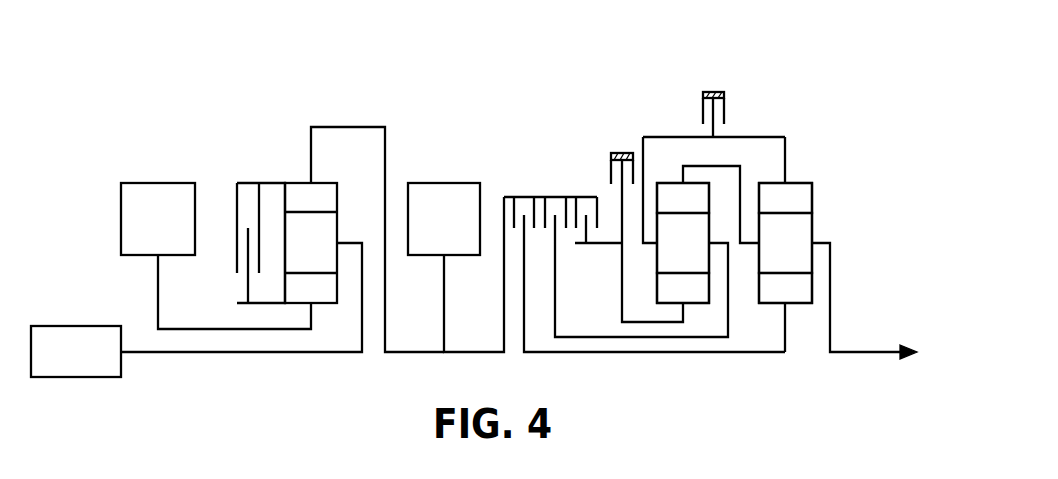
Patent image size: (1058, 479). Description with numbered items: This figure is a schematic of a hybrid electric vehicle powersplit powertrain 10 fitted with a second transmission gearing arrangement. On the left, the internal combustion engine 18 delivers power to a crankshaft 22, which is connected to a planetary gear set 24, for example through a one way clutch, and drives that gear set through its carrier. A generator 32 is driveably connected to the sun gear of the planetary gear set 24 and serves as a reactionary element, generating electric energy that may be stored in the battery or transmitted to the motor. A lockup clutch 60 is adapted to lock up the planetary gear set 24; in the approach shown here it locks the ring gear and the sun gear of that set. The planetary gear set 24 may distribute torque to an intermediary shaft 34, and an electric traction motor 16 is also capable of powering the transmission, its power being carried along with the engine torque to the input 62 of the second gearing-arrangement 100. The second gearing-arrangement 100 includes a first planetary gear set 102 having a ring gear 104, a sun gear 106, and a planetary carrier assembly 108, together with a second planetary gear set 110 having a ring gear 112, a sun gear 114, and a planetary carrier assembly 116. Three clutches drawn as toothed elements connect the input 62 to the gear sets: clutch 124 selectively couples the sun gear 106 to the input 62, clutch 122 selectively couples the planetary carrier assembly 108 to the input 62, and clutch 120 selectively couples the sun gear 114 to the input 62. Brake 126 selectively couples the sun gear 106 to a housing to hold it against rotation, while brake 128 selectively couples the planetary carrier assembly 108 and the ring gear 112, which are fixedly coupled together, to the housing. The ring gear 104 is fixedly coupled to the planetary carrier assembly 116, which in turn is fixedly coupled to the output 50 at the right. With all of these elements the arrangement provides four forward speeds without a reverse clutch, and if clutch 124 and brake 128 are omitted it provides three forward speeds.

The powersplit powertrain 10 is at (222, 102).
The internal combustion engine 18 is at (95, 326).
The generator 32 is at (172, 183).
The lockup clutch 60 is at (272, 183).
The planetary gear set 24 is at (320, 183).
The crankshaft 22 is at (258, 354).
The electric traction motor 16 is at (461, 183).
The intermediary shaft 34 is at (413, 354).
The input 62 is at (477, 354).
The clutch 120 is at (524, 197).
The clutch 122 is at (555, 197).
The clutch 124 is at (585, 197).
The brake 126 is at (624, 153).
The brake 128 is at (713, 92).
The second gearing-arrangement 100 is at (712, 62).
The first planetary gear set 102 is at (664, 183).
The ring gear 104 is at (666, 209).
The planetary carrier assembly 108 is at (666, 252).
The sun gear 106 is at (666, 299).
The second planetary gear set 110 is at (795, 183).
The ring gear 112 is at (768, 209).
The planetary carrier assembly 116 is at (768, 252).
The sun gear 114 is at (768, 299).
The output 50 is at (855, 353).